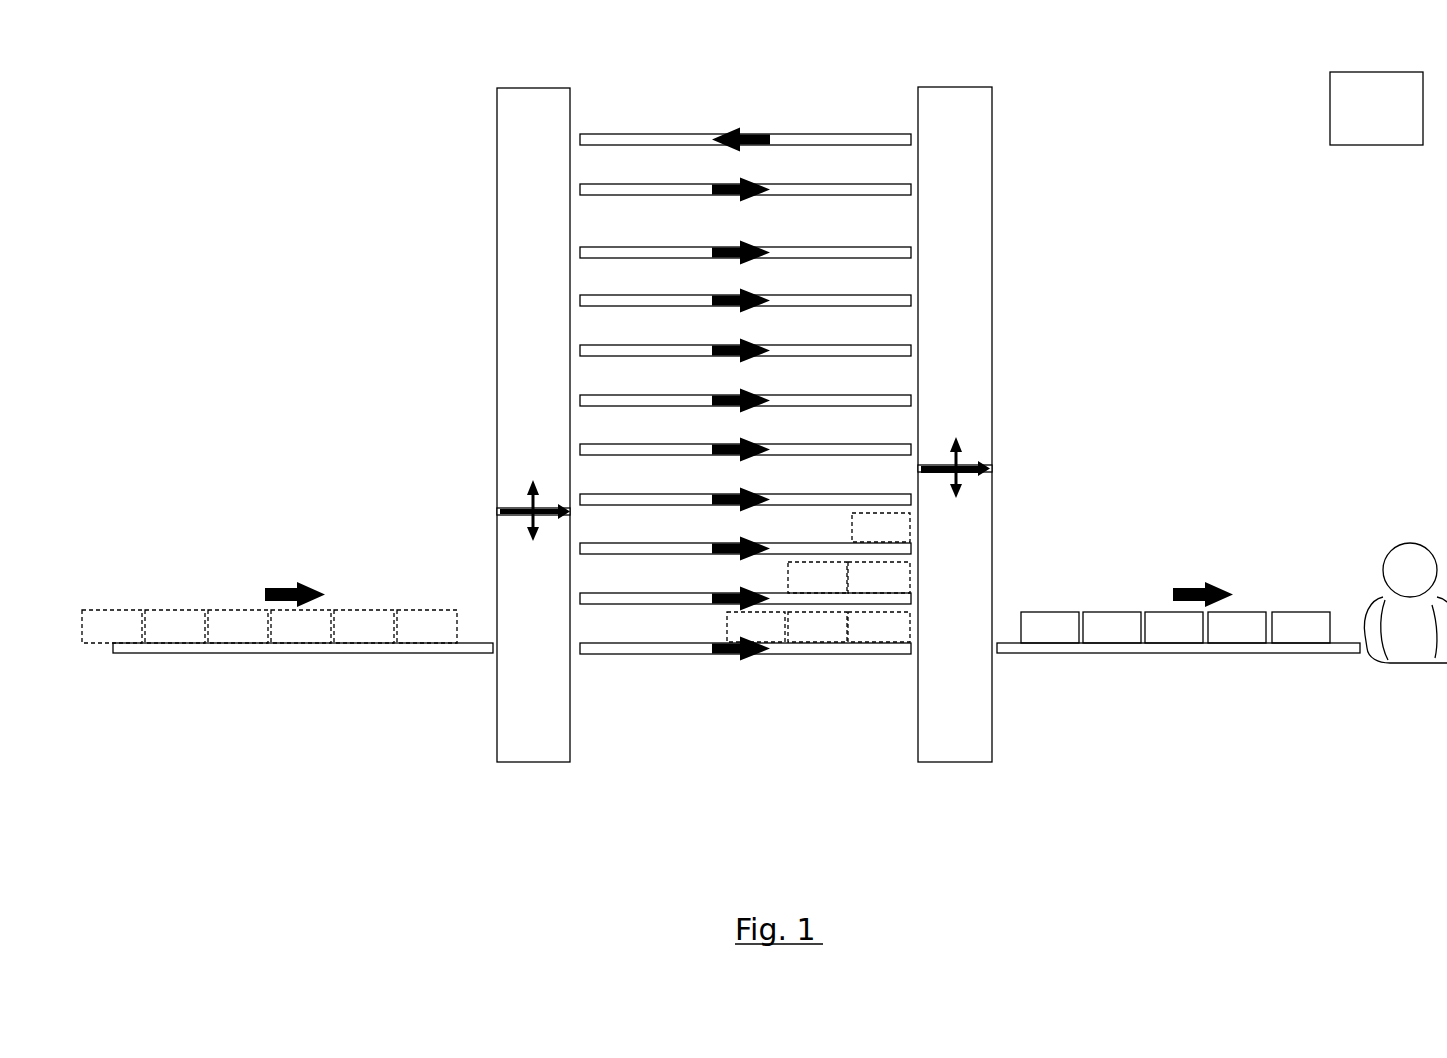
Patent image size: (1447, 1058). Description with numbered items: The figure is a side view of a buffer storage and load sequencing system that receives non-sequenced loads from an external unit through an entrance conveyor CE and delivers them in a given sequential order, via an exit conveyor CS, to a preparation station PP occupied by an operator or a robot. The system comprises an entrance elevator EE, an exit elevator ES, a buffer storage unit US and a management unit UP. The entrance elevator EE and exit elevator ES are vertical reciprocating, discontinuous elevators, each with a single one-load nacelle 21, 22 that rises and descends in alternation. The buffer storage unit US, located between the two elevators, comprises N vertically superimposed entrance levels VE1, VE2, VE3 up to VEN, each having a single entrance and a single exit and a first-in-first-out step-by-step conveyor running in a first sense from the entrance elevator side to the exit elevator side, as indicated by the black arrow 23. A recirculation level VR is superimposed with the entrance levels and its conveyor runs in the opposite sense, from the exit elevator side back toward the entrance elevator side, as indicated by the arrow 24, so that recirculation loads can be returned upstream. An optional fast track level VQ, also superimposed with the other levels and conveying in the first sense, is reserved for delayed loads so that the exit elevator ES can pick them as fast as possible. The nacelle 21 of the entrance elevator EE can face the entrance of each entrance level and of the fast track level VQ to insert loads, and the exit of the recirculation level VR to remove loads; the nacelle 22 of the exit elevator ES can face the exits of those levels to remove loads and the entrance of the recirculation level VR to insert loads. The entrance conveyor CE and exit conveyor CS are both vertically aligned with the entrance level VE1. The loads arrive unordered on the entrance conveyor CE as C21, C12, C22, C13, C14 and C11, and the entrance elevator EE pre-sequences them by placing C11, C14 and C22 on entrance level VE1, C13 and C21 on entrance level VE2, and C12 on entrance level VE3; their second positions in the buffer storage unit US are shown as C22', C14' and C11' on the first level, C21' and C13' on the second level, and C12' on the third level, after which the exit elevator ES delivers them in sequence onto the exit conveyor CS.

The nacelle 21 is at (497, 508).
The nacelle 22 is at (991, 465).
The arrow 23 is at (727, 655).
The arrow 24 is at (753, 130).
The recirculation level VR is at (855, 137).
The fast track level VQ is at (672, 185).
The entrance level VEN is at (625, 252).
The buffer storage unit US is at (802, 738).
The entrance level VE3 is at (670, 554).
The entrance level VE2 is at (632, 604).
The entrance level VE1 is at (603, 655).
The entrance conveyor CE is at (183, 653).
The exit conveyor CS is at (1163, 653).
The management unit UP is at (1368, 145).
The preparation station PP is at (1395, 660).
The entrance elevator EE is at (513, 762).
The exit elevator ES is at (953, 763).
The load C21 is at (112, 626).
The load C12 is at (175, 626).
The load C22 is at (238, 626).
The load C13 is at (301, 626).
The load C14 is at (364, 626).
The load C11 is at (427, 626).
The load C12' is at (881, 528).
The load C21' is at (817, 577).
The load C13' is at (879, 577).
The load C22' is at (756, 627).
The load C14' is at (817, 627).
The load C11' is at (879, 627).